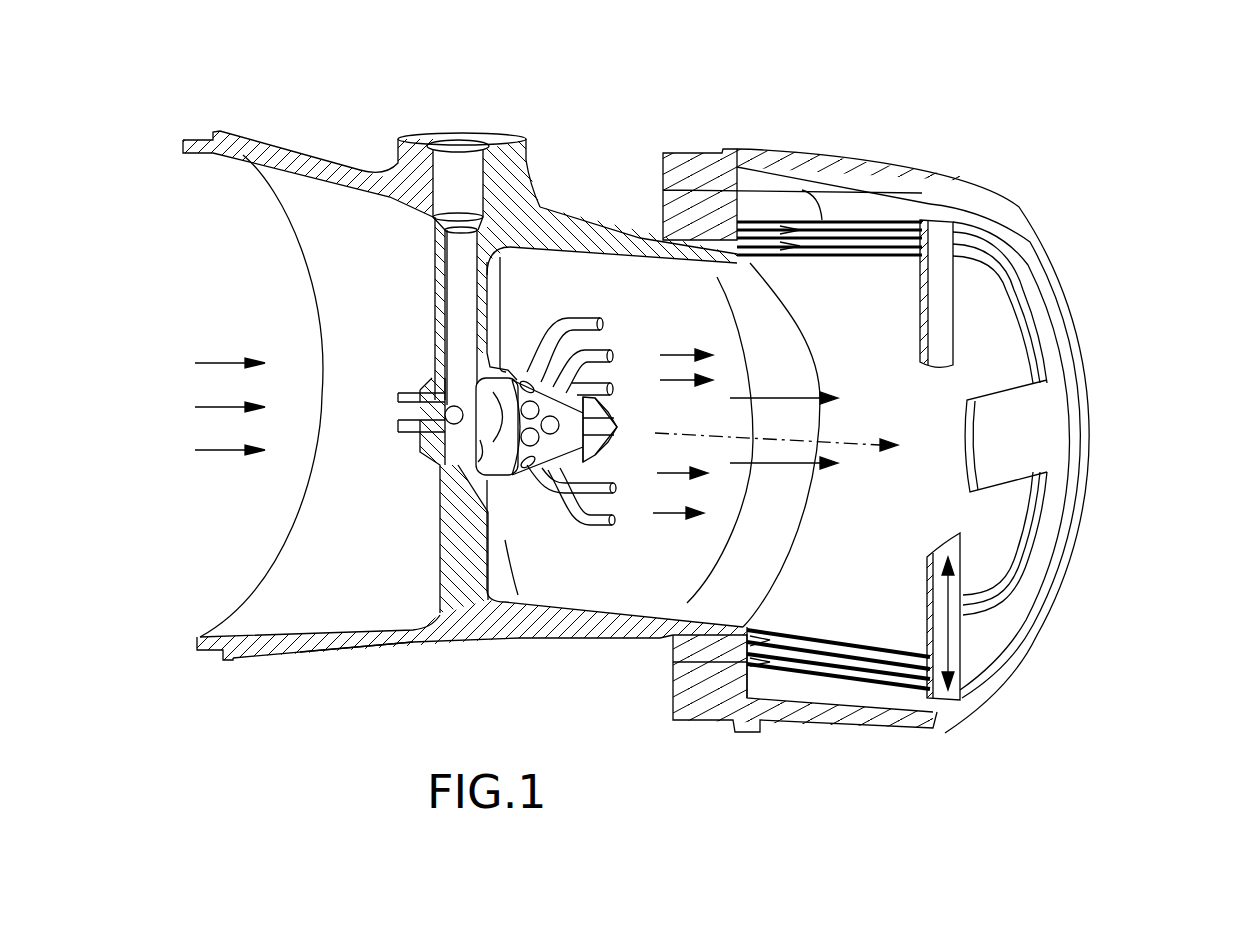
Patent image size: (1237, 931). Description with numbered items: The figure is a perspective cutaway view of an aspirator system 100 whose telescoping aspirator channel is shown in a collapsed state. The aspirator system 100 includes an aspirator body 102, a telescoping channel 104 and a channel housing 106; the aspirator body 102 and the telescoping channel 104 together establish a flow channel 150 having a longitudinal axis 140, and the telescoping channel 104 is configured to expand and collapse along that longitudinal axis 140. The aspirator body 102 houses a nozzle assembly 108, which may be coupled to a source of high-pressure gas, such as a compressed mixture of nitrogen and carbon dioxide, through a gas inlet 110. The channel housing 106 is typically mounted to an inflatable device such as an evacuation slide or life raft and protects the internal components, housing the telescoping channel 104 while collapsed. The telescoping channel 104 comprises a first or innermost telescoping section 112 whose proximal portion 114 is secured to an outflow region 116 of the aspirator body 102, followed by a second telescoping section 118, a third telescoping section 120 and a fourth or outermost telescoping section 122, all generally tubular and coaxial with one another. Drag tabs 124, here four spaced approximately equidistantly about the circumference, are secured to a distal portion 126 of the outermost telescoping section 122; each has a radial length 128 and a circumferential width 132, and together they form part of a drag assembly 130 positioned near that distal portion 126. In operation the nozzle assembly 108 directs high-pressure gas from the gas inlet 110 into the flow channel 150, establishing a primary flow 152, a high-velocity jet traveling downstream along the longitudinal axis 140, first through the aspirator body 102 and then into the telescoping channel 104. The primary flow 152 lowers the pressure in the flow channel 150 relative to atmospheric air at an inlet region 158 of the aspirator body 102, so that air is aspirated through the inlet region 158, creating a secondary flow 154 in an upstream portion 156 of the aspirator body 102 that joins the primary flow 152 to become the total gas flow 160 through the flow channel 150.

The aspirator system 100 is at (1125, 90).
The aspirator body 102 is at (547, 625).
The telescoping channel 104 is at (1044, 326).
The channel housing 106 is at (920, 728).
The nozzle assembly 108 is at (572, 272).
The gas inlet 110 is at (447, 136).
The first or innermost telescoping section 112 is at (772, 680).
The proximal portion 114 is at (720, 630).
The outflow region 116 is at (697, 635).
The second telescoping section 118 is at (805, 655).
The third telescoping section 120 is at (843, 677).
The fourth or outermost telescoping section 122 is at (857, 222).
The drag tabs 124 is at (940, 250).
The distal portion 126 is at (893, 220).
The radial length 128 is at (945, 616).
The drag assembly 130 is at (1044, 421).
The circumferential width 132 is at (957, 592).
The longitudinal axis 140 is at (855, 447).
The flow channel 150 is at (670, 290).
The primary flow 152 is at (676, 512).
The secondary flow 154 is at (215, 356).
The upstream portion 156 is at (344, 646).
The inlet region 158 is at (262, 652).
The total gas flow 160 is at (775, 463).